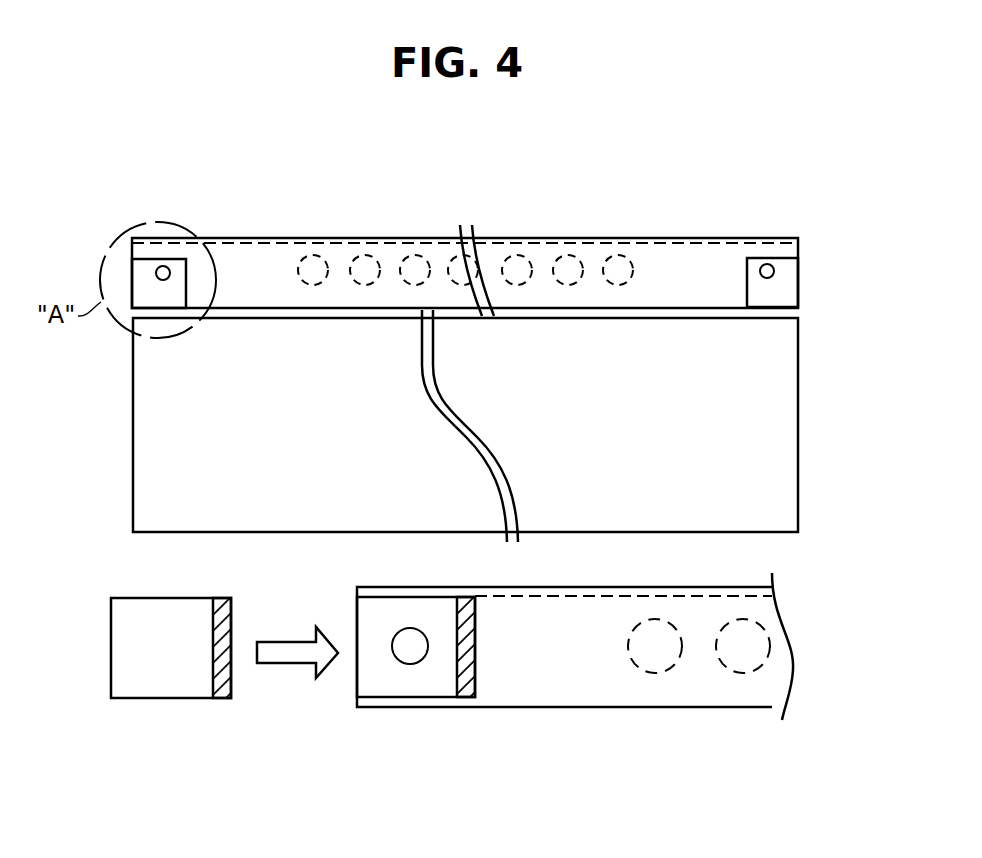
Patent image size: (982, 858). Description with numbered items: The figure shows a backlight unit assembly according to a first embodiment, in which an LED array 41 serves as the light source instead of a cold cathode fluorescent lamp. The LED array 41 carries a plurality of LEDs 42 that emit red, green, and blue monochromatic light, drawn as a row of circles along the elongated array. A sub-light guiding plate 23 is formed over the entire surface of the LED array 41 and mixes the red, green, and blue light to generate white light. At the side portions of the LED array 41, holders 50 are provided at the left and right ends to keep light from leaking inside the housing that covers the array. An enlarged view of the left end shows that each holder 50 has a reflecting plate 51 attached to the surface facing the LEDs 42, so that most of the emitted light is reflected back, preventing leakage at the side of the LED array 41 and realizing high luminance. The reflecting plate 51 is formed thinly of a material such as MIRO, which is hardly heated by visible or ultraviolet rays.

The sub-light guiding plate 23 is at (786, 418).
The LED array 41 is at (245, 250).
The LEDs 42 is at (313, 256).
The holder 50 is at (159, 680).
The reflecting plate 51 is at (222, 688).